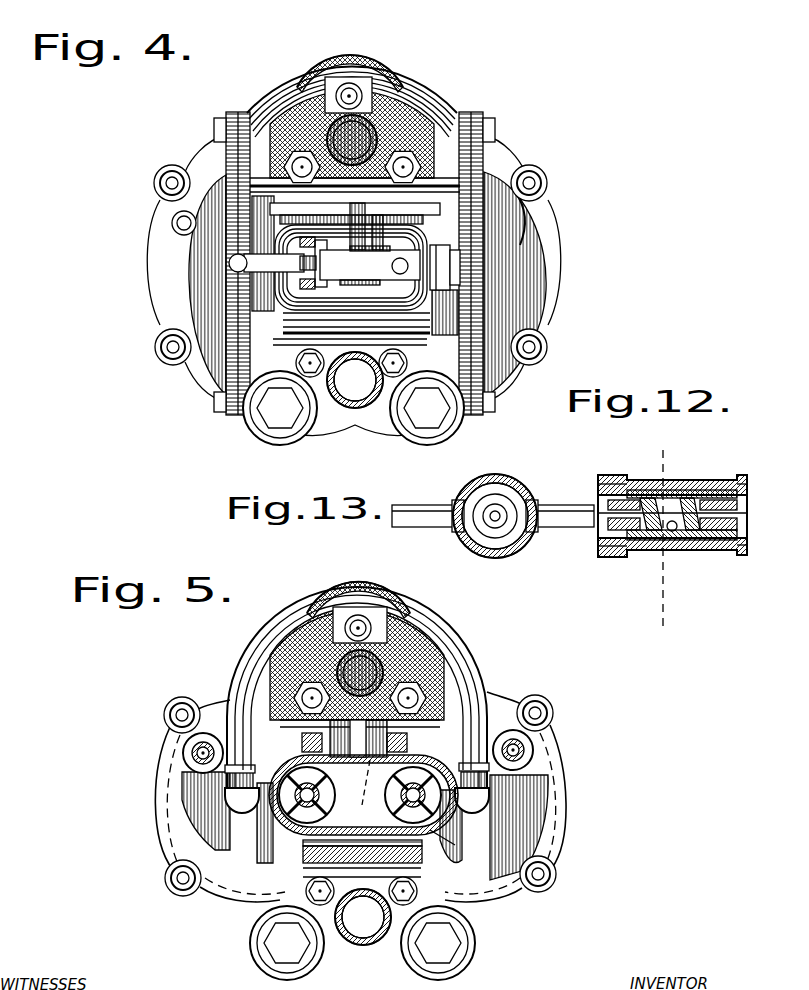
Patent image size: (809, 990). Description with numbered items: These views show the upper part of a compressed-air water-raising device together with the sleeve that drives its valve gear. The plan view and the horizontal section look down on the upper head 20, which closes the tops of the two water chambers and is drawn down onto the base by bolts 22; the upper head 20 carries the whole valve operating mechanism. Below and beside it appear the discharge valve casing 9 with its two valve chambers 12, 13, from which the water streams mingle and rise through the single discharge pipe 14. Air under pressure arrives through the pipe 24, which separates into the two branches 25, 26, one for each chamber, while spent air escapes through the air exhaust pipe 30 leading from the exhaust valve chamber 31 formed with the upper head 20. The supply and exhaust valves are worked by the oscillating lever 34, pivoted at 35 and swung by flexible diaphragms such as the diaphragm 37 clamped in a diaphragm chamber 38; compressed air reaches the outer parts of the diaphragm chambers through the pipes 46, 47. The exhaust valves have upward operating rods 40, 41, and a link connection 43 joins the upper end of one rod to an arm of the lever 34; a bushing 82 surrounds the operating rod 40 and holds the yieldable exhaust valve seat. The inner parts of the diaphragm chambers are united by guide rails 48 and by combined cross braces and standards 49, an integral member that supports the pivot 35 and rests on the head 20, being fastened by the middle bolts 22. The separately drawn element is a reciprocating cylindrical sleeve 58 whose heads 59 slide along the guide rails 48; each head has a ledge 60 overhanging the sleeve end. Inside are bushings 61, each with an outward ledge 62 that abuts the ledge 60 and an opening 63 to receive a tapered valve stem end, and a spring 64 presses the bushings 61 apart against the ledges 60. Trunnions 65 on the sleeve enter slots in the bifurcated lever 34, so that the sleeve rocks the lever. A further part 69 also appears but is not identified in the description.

In FIG. 4, the discharge valve casing 9 is at (365, 413).
In FIG. 5, the discharge valve casing 9 is at (368, 947).
In FIG. 4, the valve chamber 12 is at (272, 445).
In FIG. 4, the valve chamber 13 is at (425, 445).
In FIG. 12, the valve chamber 13 is at (663, 537).
In FIG. 4, the discharge pipe 14 is at (345, 428).
In FIG. 5, the discharge pipe 14 is at (345, 950).
In FIG. 4, the upper head 20 is at (198, 270).
In FIG. 5, the upper head 20 is at (200, 822).
In FIG. 4, the bolts 22 is at (290, 168).
In FIG. 5, the bolts 22 is at (430, 700).
In FIG. 4, the air supply pipe 24 is at (392, 75).
In FIG. 5, the air supply pipe 24 is at (395, 600).
In FIG. 4, the branch pipe 25 is at (270, 108).
In FIG. 5, the branch pipe 25 is at (268, 655).
In FIG. 4, the branch pipe 26 is at (428, 107).
In FIG. 5, the branch pipe 26 is at (467, 632).
In FIG. 4, the air exhaust pipe 30 is at (407, 115).
In FIG. 5, the air exhaust pipe 30 is at (408, 657).
In FIG. 4, the exhaust valve chamber 31 is at (427, 300).
In FIG. 5, the exhaust valve chamber 31 is at (445, 840).
In FIG. 4, the oscillating lever 34 is at (228, 300).
In FIG. 4, the pivot 35 is at (230, 363).
In FIG. 4, the flexible diaphragm 37 is at (527, 230).
In FIG. 4, the diaphragm chamber 38 is at (232, 263).
In FIG. 5, the operating rod 40 is at (285, 815).
In FIG. 5, the operating rod 41 is at (430, 815).
In FIG. 4, the link connection 43 is at (420, 236).
In FIG. 5, the air pipe 46 is at (533, 752).
In FIG. 4, the air pipe 47 is at (355, 214).
In FIG. 5, the air pipe 47 is at (183, 758).
In FIG. 4, the guide rails 48 is at (370, 265).
In FIG. 5, the combined cross braces and supporting standards 49 is at (415, 724).
In FIG. 13, the reciprocating cylindrical sleeve 58 is at (495, 557).
In FIG. 12, the reciprocating cylindrical sleeve 58 is at (676, 540).
In FIG. 12, the heads 59 is at (618, 556).
In FIG. 12, the ledge 60 is at (608, 478).
In FIG. 12, the bushings 61 is at (648, 490).
In FIG. 12, the ledge 62 is at (598, 484).
In FIG. 12, the opening 63 is at (688, 490).
In FIG. 13, the spring 64 is at (480, 548).
In FIG. 13, the trunnions 65 is at (440, 530).
In FIG. 4, the adjusting screw 69 is at (462, 262).
In FIG. 5, the bushing 82 is at (445, 760).